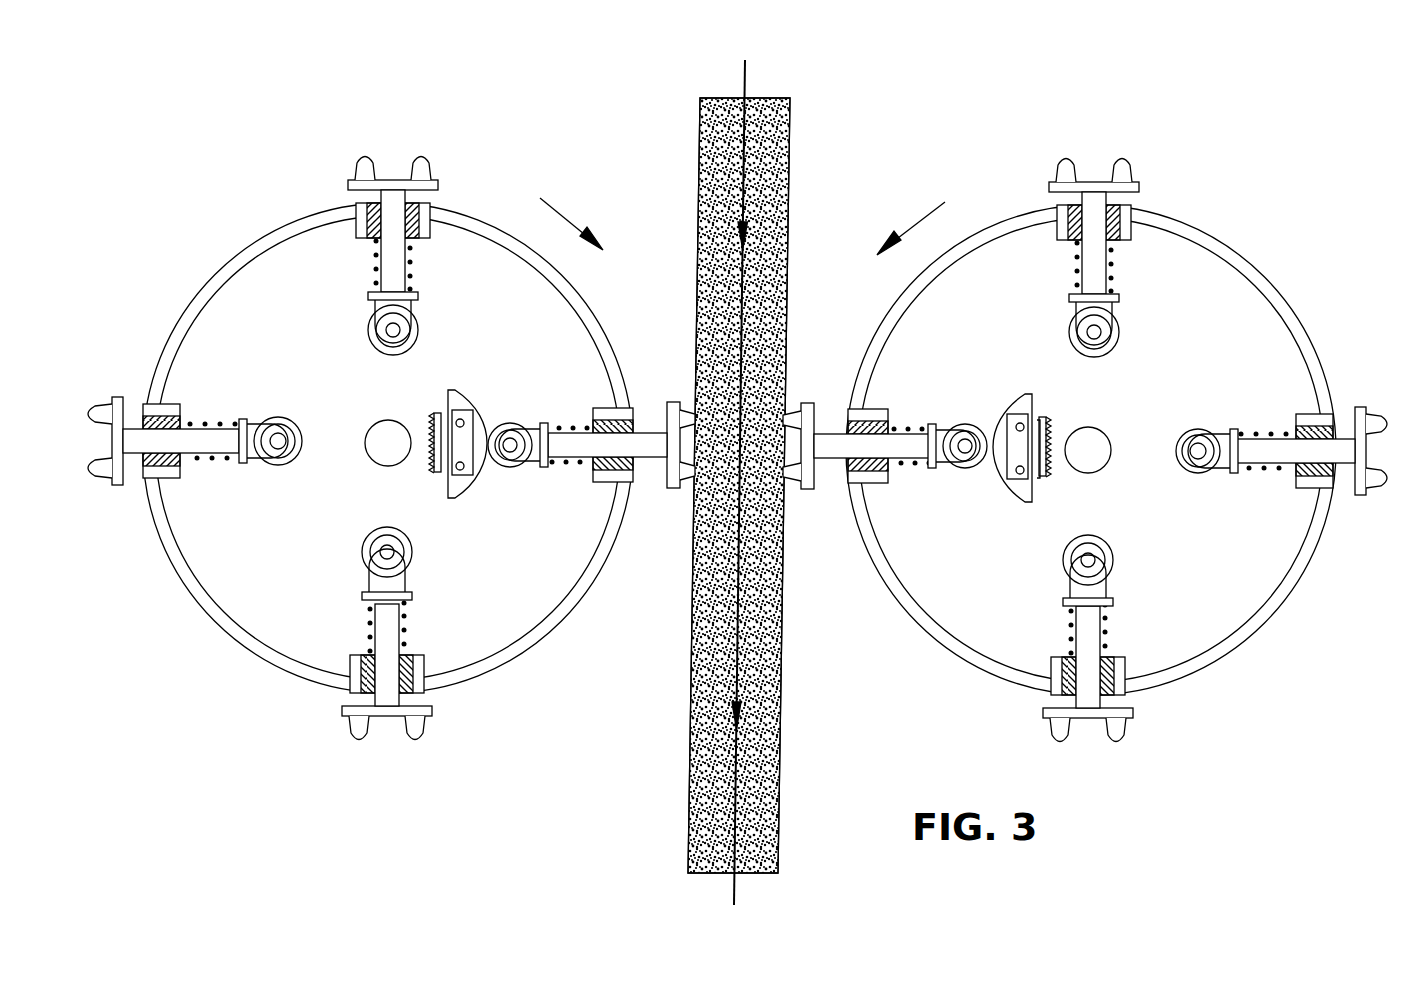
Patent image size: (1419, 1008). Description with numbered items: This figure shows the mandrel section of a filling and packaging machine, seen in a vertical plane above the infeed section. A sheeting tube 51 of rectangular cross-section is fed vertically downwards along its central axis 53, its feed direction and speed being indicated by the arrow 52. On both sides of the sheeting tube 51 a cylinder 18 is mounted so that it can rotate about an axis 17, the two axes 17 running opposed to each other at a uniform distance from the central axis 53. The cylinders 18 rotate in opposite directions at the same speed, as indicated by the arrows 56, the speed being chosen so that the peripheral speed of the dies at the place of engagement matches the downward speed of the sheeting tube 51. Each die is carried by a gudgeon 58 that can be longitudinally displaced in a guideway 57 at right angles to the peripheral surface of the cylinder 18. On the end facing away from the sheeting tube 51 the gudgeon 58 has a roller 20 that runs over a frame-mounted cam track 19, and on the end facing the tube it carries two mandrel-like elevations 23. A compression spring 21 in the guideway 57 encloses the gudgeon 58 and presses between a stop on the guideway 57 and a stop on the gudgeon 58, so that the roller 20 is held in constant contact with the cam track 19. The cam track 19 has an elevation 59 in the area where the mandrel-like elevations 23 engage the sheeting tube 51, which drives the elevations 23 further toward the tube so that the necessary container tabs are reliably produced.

The axis 17 is at (369, 427).
The cylinder 18 is at (226, 263).
The cam track 19 is at (480, 472).
The roller 20 is at (266, 460).
The compression spring 21 is at (370, 615).
The mandrel-like elevations 23 is at (350, 730).
The sheeting tube 51 is at (704, 142).
The arrow indicating feed direction 52 is at (742, 192).
The central axis 53 is at (748, 80).
The arrows indicating rotation 56 is at (563, 212).
The guideway 57 is at (1118, 678).
The gudgeon 58 is at (405, 614).
The elevation 59 is at (997, 432).